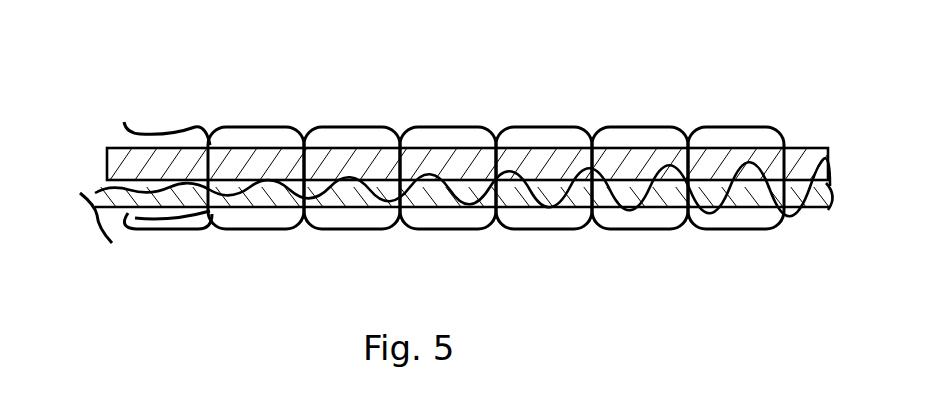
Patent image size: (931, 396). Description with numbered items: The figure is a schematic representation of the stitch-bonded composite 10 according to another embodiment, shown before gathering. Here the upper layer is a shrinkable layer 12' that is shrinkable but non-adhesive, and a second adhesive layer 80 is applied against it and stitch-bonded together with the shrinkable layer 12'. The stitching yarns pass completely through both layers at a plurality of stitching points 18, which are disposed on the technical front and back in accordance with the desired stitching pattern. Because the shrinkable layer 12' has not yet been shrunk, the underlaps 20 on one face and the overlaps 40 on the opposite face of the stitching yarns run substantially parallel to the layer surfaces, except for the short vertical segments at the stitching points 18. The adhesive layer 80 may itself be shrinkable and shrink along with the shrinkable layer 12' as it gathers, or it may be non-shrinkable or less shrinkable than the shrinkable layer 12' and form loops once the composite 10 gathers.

The composite 10 is at (106, 59).
The shrinkable layer 12' is at (458, 122).
The stitching points 18 is at (309, 138).
The underlaps 20 is at (362, 124).
The overlaps 40 is at (250, 231).
The second adhesive layer 80 is at (803, 197).